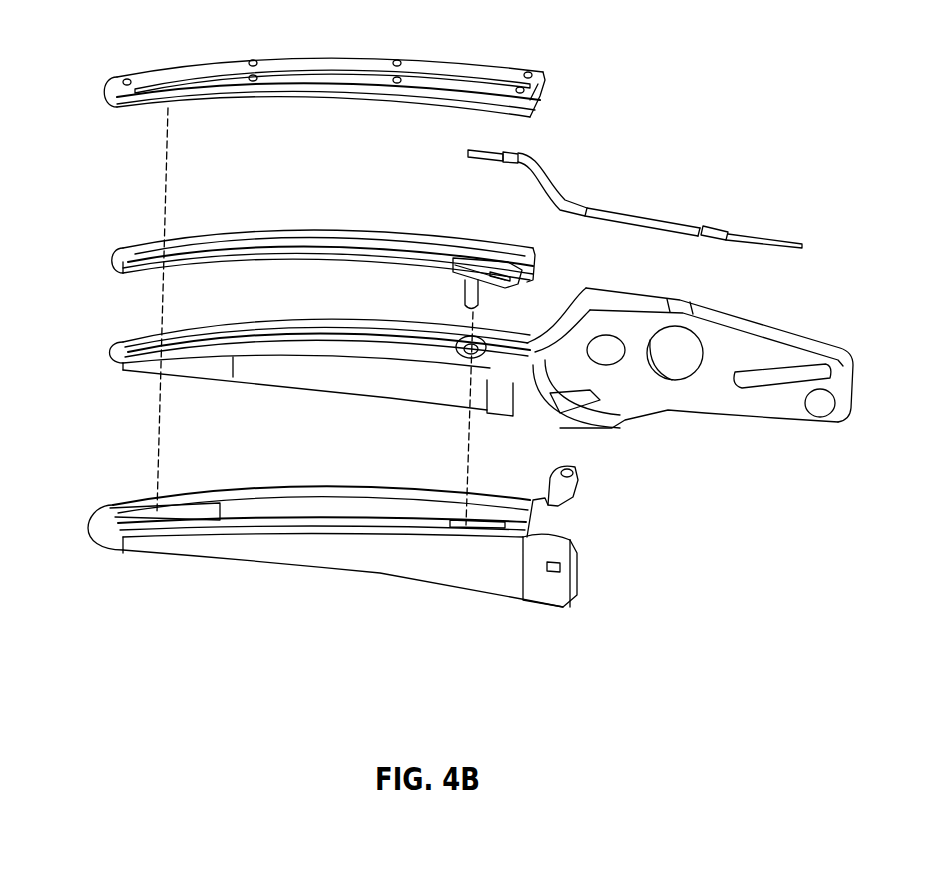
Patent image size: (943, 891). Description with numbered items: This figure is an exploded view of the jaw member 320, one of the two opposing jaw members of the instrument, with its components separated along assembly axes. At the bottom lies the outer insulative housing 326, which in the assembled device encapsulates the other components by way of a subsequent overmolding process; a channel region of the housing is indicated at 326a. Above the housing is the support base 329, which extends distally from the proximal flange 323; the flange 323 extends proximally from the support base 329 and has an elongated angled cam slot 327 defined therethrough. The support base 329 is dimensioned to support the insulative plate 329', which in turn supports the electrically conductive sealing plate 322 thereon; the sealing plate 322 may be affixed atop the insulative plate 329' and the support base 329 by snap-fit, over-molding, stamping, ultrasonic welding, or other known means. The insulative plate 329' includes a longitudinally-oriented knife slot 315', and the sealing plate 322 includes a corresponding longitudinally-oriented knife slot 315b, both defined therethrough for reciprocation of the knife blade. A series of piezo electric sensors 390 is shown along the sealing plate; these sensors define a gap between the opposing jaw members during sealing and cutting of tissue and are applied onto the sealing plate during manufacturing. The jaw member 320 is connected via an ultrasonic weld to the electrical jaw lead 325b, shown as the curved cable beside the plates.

The jaw member 320 is at (703, 60).
The electrically conductive sealing plate 322 is at (363, 60).
The knife slot 315b is at (438, 72).
The piezo electric sensors 390 is at (127, 79).
The electrical jaw lead 325b is at (617, 218).
The insulative plate 329' is at (322, 234).
The knife slot 315' is at (329, 252).
The support base 329 is at (320, 350).
The proximal flange 323 is at (757, 328).
The cam slot 327 is at (783, 378).
The channel 326a is at (322, 482).
The outer insulative housing 326 is at (392, 567).